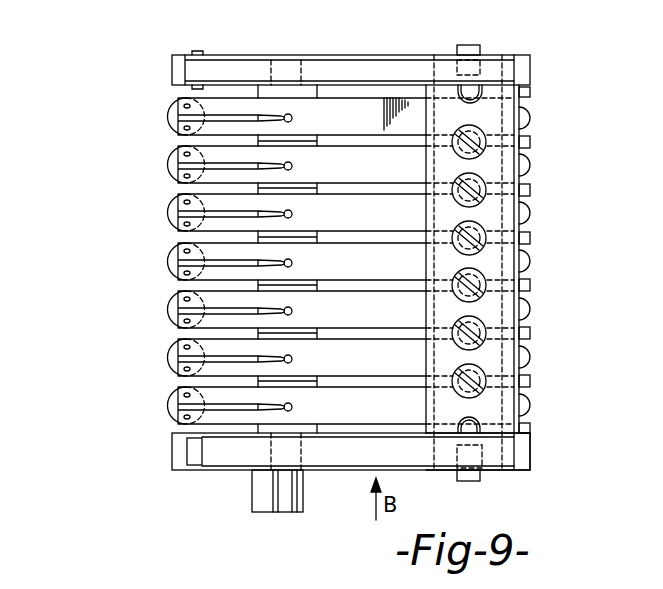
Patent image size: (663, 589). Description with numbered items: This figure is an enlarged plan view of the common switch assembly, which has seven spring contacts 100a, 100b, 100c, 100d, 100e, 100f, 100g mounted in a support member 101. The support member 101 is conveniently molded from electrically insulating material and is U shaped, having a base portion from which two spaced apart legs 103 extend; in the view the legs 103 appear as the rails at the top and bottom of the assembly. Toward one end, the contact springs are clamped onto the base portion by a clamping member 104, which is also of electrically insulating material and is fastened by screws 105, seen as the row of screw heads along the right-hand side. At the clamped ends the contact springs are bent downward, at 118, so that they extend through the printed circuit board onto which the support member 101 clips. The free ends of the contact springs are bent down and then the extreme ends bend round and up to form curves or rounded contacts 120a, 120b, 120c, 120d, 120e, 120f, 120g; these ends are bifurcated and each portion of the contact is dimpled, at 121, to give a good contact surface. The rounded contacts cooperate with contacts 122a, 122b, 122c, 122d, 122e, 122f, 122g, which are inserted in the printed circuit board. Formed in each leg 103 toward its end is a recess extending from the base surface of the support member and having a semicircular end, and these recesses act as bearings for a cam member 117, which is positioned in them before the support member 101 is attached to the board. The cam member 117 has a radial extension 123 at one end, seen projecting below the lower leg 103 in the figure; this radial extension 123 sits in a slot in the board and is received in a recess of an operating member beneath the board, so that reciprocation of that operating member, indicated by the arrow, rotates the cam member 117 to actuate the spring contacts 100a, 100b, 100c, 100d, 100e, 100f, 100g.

The spring contact 100a is at (343, 414).
The spring contact 100b is at (343, 366).
The spring contact 100c is at (343, 318).
The spring contact 100d is at (343, 270).
The spring contact 100e is at (343, 221).
The spring contact 100f is at (343, 173).
The spring contact 100g is at (343, 125).
The support member 101 is at (513, 452).
The leg 103 is at (312, 66).
The clamping member 104 is at (497, 120).
The screw 105 is at (482, 179).
The cam member 117 is at (291, 496).
The downward bend of contact spring 118 is at (530, 266).
The rounded contact 120a is at (179, 398).
The rounded contact 120b is at (179, 350).
The rounded contact 120c is at (179, 302).
The rounded contact 120d is at (179, 254).
The rounded contact 120e is at (179, 205).
The rounded contact 120f is at (179, 157).
The rounded contact 120g is at (179, 109).
The dimple 121 is at (188, 126).
The contact 122a is at (168, 406).
The contact 122b is at (168, 358).
The contact 122c is at (168, 310).
The contact 122d is at (168, 262).
The contact 122e is at (168, 213).
The contact 122f is at (168, 165).
The contact 122g is at (168, 117).
The radial extension 123 is at (264, 505).